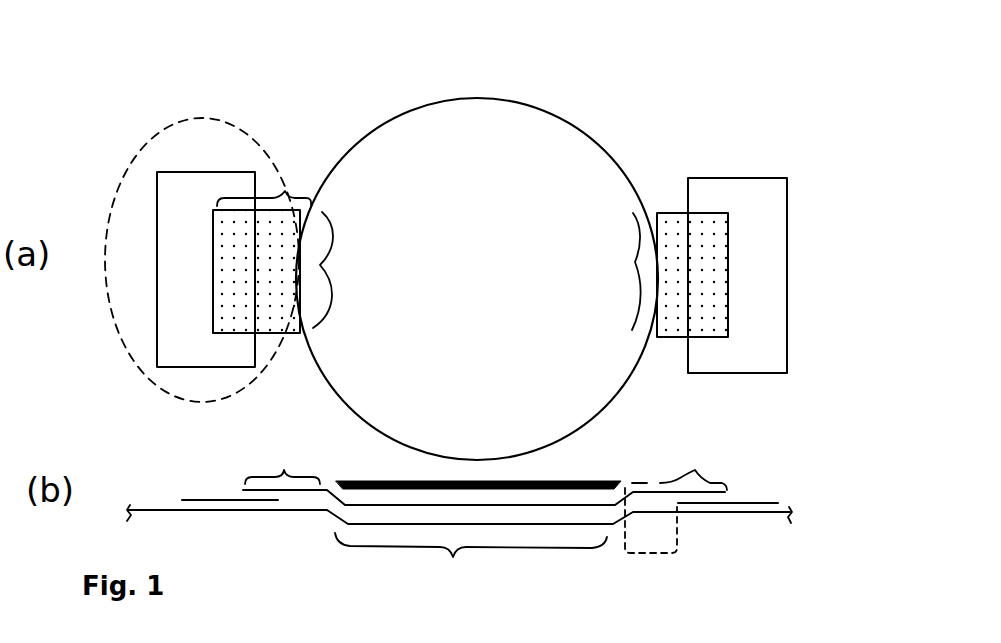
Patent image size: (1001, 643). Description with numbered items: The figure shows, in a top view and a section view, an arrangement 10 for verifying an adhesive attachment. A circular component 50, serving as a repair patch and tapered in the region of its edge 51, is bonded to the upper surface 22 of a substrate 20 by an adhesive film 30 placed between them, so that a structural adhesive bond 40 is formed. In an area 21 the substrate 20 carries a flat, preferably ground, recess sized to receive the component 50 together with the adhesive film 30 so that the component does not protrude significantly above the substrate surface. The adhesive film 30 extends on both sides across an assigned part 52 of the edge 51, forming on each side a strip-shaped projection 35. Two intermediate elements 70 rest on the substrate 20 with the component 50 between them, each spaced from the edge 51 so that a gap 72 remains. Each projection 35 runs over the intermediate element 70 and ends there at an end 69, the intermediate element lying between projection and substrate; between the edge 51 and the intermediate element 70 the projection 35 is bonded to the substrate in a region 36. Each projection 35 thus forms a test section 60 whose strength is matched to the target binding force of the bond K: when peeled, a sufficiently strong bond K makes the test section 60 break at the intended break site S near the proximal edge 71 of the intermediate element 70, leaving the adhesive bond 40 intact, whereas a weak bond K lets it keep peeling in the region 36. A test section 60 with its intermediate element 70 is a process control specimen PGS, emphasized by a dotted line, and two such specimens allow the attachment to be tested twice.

The arrangement 10 is at (757, 65).
The substrate 20 is at (318, 431).
The area 21 is at (471, 567).
The upper surface 22 is at (392, 523).
The adhesive film 30 is at (723, 272).
The projection 35 is at (285, 191).
The region 36 is at (270, 267).
The structural adhesive bond 40 is at (345, 516).
The component 50 is at (533, 118).
The edge 51 is at (660, 232).
The assigned part 52 is at (321, 265).
The test section 60 is at (274, 222).
The end 69 is at (211, 277).
The intermediate element 70 is at (235, 183).
The edge 71 is at (688, 212).
The gap 72 is at (284, 345).
The intended break site S is at (252, 338).
The bond K is at (517, 511).
The process control specimen PGS is at (205, 118).